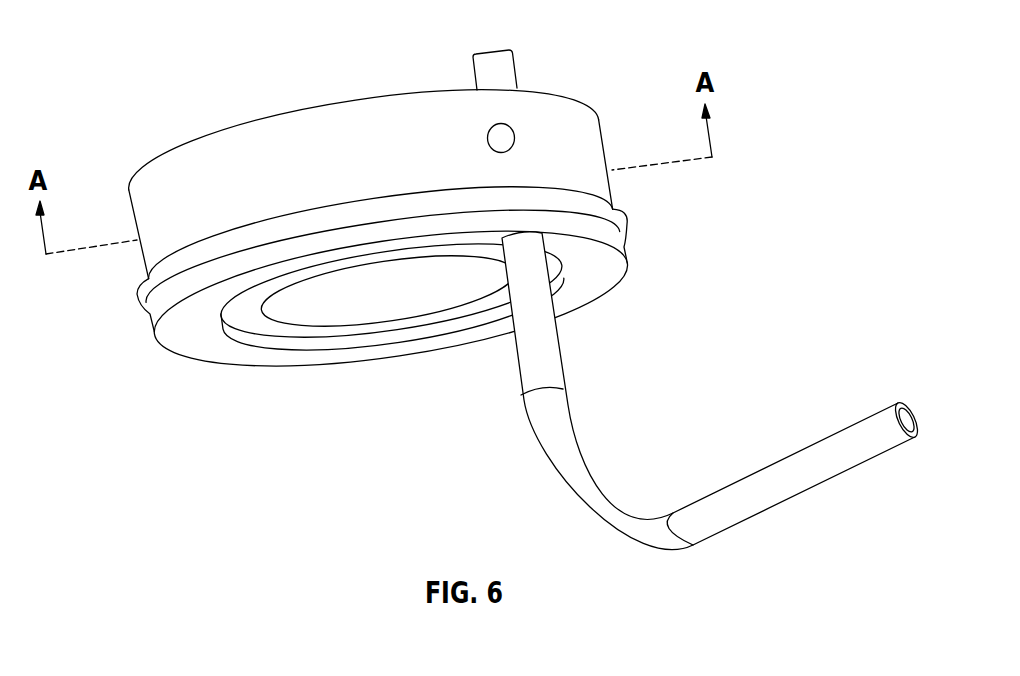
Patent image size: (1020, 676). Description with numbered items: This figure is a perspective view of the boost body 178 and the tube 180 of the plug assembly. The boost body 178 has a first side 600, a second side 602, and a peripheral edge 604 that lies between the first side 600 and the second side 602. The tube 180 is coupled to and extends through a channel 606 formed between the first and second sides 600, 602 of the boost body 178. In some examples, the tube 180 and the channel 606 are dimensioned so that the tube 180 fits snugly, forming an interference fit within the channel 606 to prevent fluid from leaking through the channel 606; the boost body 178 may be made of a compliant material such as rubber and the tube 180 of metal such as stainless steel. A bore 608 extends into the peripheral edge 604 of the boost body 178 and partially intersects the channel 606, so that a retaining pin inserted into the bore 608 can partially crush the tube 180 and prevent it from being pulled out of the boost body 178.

The boost body 178 is at (253, 156).
The tube 180 is at (572, 456).
The first side 600 is at (607, 265).
The second side 602 is at (555, 97).
The peripheral edge 604 is at (588, 146).
The channel 606 is at (500, 253).
The bore 608 is at (494, 130).